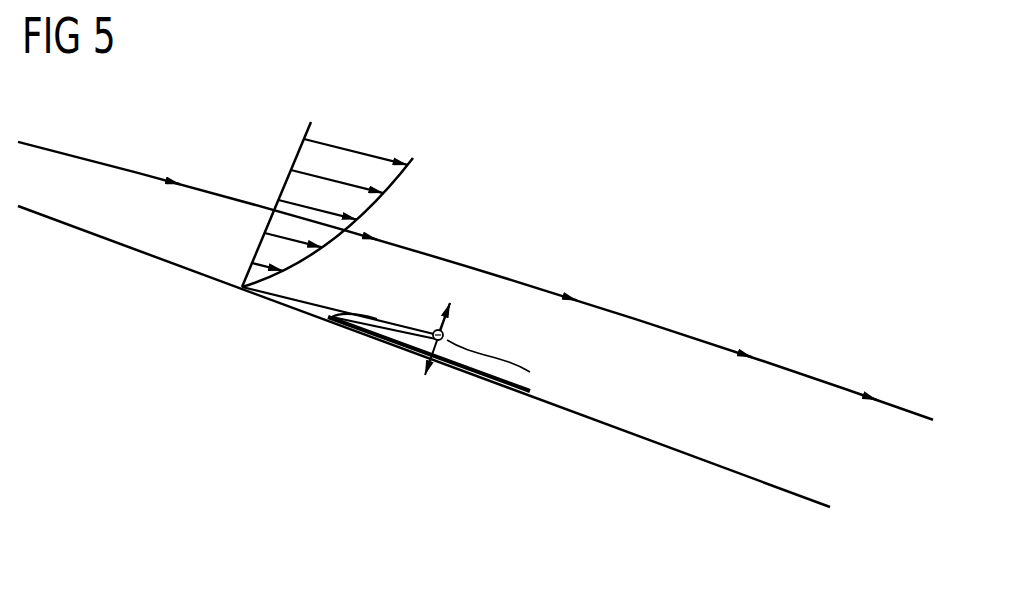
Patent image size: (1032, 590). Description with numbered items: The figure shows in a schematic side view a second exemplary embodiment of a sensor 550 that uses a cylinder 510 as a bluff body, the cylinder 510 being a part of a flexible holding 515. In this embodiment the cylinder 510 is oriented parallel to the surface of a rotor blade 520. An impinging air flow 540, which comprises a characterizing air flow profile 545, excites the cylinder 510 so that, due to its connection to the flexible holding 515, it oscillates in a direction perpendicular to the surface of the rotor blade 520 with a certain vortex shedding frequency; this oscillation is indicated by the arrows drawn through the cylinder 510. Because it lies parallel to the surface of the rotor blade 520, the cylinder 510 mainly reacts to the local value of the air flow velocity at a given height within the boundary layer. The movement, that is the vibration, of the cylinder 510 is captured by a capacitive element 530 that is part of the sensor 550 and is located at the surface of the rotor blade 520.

The cylinder 510 is at (445, 333).
The flexible holding 515 is at (353, 313).
The rotor blade 520 is at (710, 467).
The capacitive element 530 is at (480, 381).
The air flow 540 is at (655, 327).
The air flow profile 545 is at (363, 135).
The sensor 550 is at (572, 250).